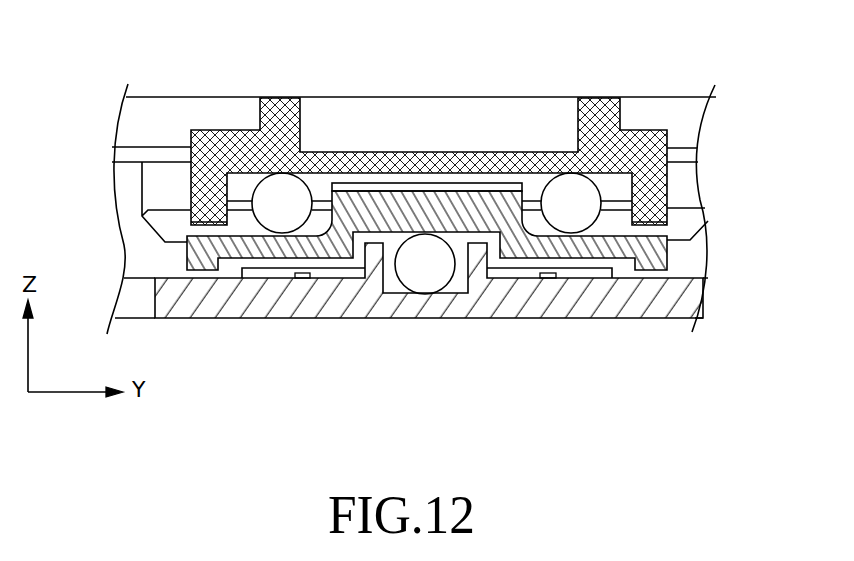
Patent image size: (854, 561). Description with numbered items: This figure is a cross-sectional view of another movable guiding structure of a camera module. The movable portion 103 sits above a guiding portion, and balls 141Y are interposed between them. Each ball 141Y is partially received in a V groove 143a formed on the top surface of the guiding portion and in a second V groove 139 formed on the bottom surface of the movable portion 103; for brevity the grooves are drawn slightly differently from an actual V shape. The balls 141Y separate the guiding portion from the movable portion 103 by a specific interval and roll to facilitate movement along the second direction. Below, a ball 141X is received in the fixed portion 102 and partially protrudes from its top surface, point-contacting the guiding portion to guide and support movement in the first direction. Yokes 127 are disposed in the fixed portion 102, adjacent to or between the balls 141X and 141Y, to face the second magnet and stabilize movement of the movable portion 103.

The movable portion 103 is at (282, 108).
The second V groove 139 is at (233, 195).
The balls 141Y is at (273, 190).
The ball 141X is at (427, 275).
The V groove 143a is at (252, 234).
The yokes 127 is at (350, 272).
The fixed portion 102 is at (498, 306).